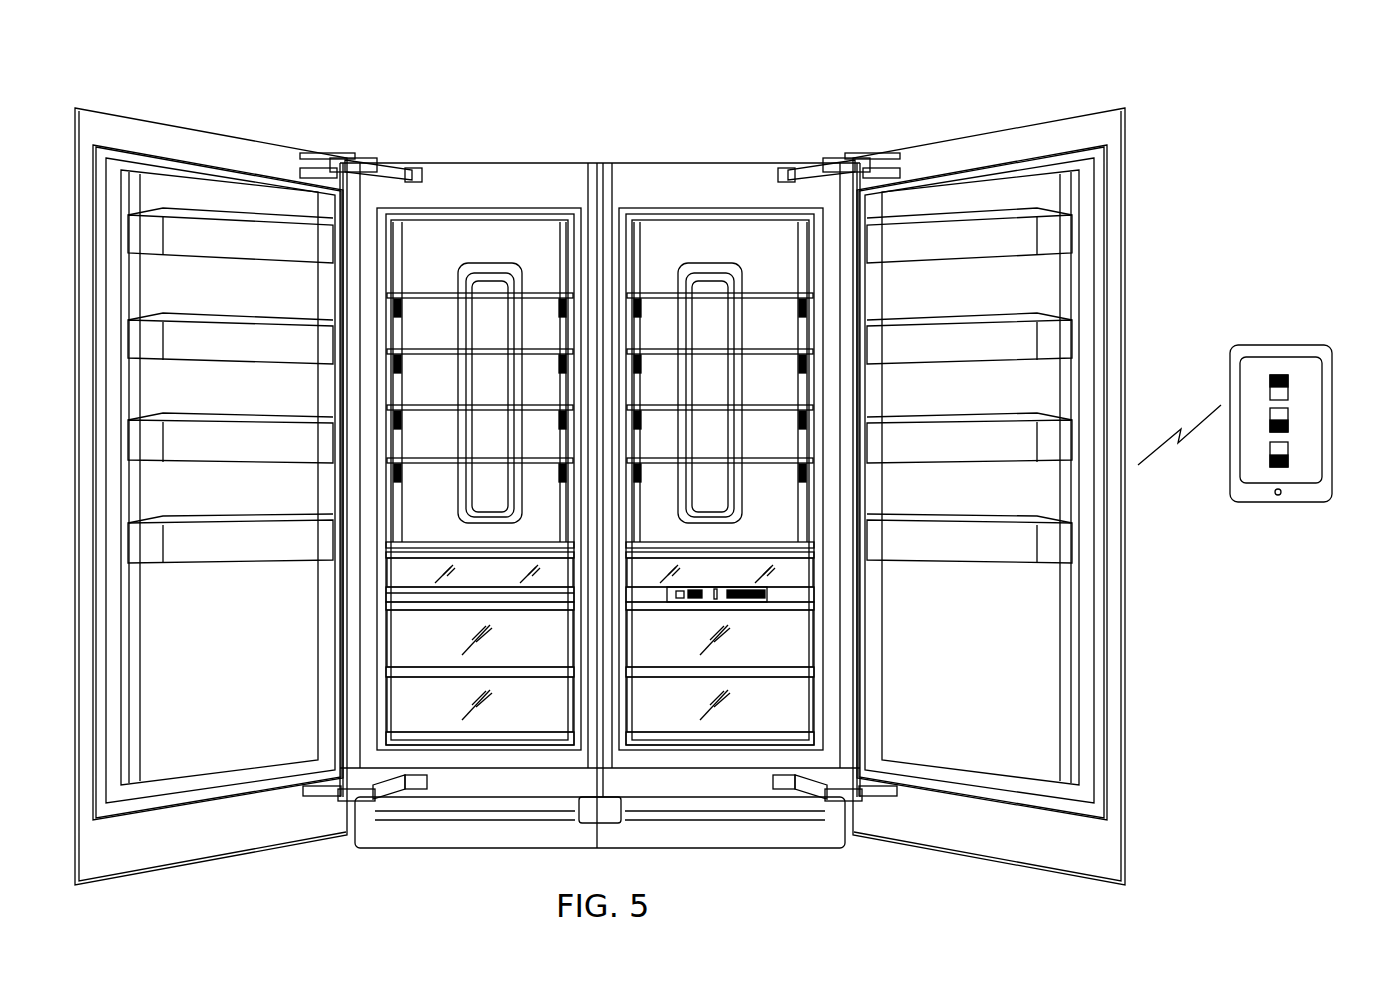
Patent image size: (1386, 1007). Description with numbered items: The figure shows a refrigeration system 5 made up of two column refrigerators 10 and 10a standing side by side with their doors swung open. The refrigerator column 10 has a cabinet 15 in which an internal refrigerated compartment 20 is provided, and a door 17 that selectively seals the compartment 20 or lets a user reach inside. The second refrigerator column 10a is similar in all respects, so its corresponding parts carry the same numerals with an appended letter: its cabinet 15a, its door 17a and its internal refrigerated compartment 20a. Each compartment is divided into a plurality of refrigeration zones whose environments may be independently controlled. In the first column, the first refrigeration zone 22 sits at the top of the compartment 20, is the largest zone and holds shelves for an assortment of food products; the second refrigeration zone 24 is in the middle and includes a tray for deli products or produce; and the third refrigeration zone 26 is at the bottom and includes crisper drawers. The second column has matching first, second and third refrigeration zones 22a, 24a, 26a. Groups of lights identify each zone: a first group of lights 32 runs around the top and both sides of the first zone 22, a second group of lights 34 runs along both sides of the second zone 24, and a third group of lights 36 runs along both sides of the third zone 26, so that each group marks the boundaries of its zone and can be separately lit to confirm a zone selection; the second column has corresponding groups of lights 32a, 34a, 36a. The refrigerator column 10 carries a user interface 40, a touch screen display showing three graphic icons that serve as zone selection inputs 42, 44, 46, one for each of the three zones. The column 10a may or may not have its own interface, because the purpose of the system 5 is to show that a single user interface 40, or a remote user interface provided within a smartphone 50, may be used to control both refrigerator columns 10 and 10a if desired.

The refrigeration system 5 is at (665, 80).
The refrigerator column 10 is at (709, 122).
The refrigerator column 10a is at (478, 125).
The cabinet 15 is at (672, 170).
The cabinet 15a is at (559, 170).
The door 17 is at (1095, 130).
The door 17a is at (115, 130).
The internal refrigerated compartment 20 is at (708, 230).
The internal refrigerated compartment 20a is at (453, 220).
The first refrigeration zone 22 is at (765, 240).
The first refrigeration zone 22a is at (508, 240).
The second refrigeration zone 24 is at (793, 567).
The second refrigeration zone 24a is at (403, 572).
The third refrigeration zone 26 is at (787, 643).
The third refrigeration zone 26a is at (413, 643).
The first group of lights 32 is at (813, 268).
The first group of lights 32a is at (575, 258).
The second group of lights 34 is at (623, 563).
The second group of lights 34a is at (577, 563).
The third group of lights 36 is at (620, 703).
The third group of lights 36a is at (580, 703).
The user interface 40 is at (710, 595).
The zone selection input 42 is at (1290, 382).
The zone selection input 44 is at (1287, 415).
The zone selection input 46 is at (1290, 448).
The smartphone 50 is at (1310, 493).